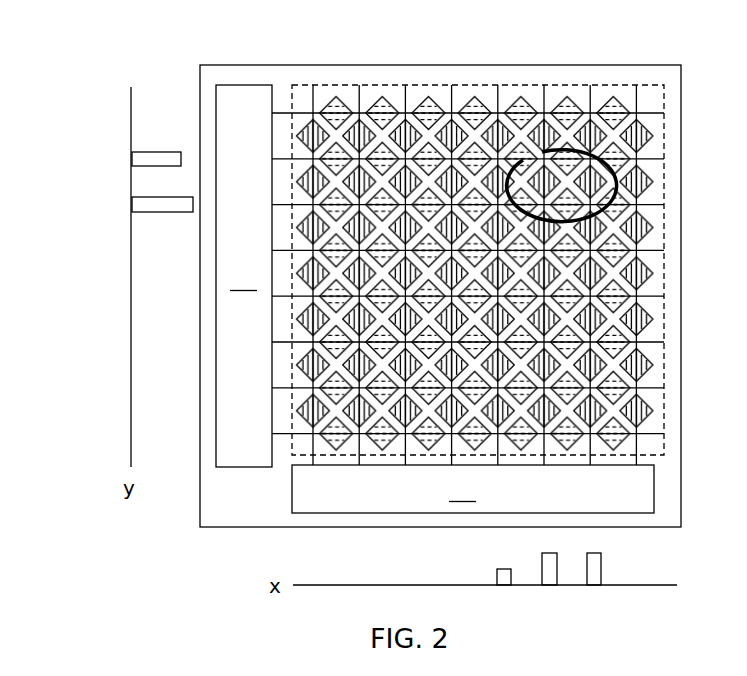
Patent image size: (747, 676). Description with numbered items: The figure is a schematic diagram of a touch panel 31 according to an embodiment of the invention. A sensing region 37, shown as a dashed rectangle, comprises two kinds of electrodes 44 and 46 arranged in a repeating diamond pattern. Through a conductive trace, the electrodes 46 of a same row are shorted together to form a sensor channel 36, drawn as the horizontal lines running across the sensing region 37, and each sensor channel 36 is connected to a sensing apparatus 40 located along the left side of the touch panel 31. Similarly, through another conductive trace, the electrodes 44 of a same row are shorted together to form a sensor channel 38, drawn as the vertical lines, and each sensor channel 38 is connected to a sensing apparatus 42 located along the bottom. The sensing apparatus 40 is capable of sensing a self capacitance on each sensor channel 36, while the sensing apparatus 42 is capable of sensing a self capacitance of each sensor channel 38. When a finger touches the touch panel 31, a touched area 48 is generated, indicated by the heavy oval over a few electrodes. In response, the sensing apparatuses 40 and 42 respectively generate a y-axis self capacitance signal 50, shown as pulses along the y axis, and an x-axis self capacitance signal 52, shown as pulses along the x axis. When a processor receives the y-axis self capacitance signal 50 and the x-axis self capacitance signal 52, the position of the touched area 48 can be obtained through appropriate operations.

The touch panel 31 is at (200, 115).
The sensor channel 36 is at (284, 152).
The sensing region 37 is at (438, 85).
The sensor channel 38 is at (638, 104).
The sensing apparatus 40 is at (244, 276).
The sensing apparatus 42 is at (473, 489).
The electrodes 44 is at (654, 273).
The electrodes 46 is at (383, 94).
The touched area 48 is at (618, 186).
The y-axis self capacitance signal 50 is at (145, 158).
The x-axis self capacitance signal 52 is at (505, 577).